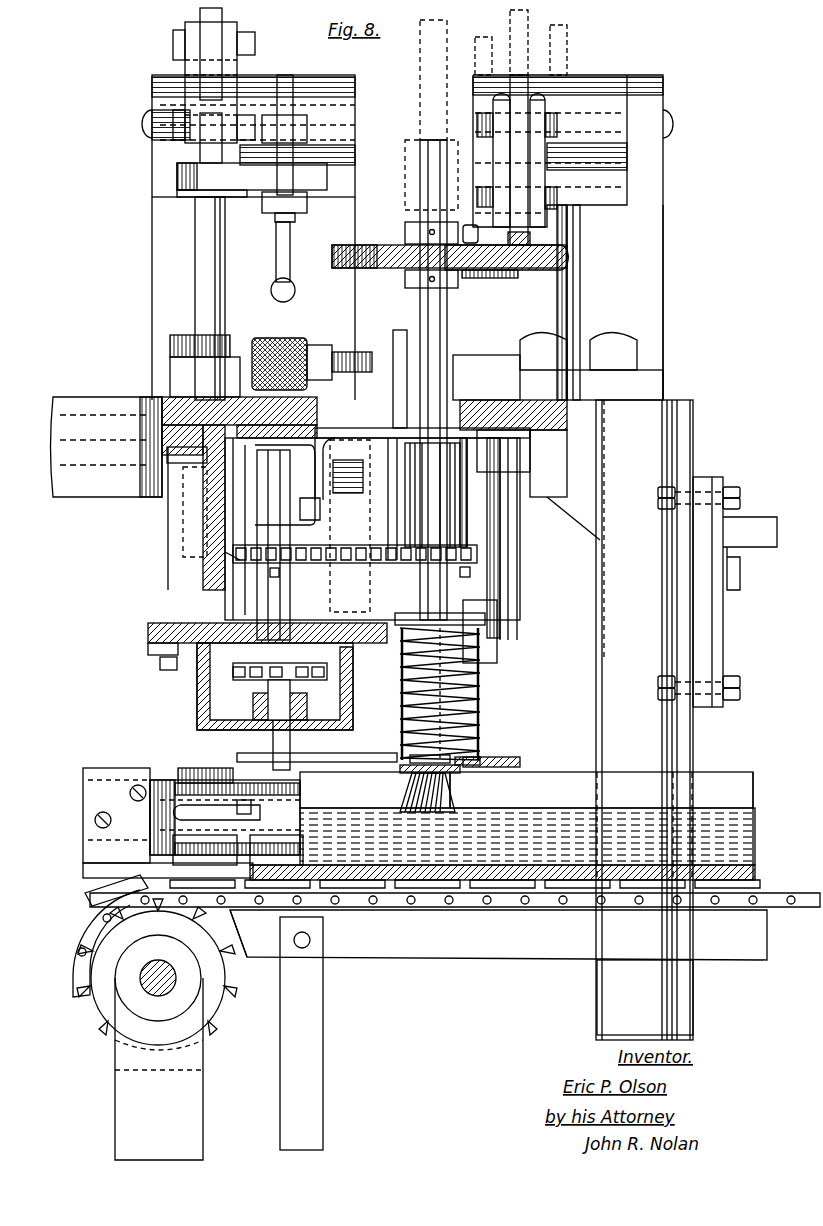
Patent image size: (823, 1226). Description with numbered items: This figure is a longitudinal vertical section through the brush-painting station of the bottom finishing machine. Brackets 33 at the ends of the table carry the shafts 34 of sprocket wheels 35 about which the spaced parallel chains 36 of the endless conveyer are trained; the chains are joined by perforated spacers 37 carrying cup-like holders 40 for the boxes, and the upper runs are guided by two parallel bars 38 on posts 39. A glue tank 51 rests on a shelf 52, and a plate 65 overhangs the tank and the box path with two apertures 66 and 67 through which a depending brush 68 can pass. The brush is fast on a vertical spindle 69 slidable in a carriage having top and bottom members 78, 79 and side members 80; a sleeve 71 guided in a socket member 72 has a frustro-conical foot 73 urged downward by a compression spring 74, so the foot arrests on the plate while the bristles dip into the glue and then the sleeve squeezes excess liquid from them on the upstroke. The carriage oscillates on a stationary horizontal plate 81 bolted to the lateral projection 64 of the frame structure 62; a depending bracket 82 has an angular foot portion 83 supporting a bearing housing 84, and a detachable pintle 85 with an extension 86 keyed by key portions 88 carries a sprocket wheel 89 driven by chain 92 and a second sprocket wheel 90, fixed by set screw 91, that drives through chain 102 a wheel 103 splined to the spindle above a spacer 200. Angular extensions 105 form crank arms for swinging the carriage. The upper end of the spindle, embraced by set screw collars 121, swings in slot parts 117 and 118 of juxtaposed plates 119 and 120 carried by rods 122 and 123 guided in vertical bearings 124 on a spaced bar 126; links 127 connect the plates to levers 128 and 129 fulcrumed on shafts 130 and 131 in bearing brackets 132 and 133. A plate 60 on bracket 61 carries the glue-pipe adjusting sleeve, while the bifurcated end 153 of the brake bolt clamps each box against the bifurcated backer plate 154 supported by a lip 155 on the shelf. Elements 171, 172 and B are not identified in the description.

The brackets 33 is at (125, 1126).
The shafts 34 is at (140, 975).
The sprocket wheels 35 is at (110, 1005).
The chains 36 is at (75, 930).
The perforated spacers 37 is at (400, 930).
The parallel bars 38 is at (445, 945).
The posts 39 is at (320, 1085).
The holders 40 is at (565, 880).
The tank 51 is at (735, 880).
The shelf 52 is at (85, 865).
The plate 60 is at (752, 522).
The bracket 61 is at (725, 622).
The frame structure 62 is at (60, 400).
The lateral projection 64 is at (215, 475).
The plate 65 is at (520, 760).
The aperture 66 is at (250, 755).
The aperture 67 is at (480, 757).
The brush 68 is at (410, 788).
The spindle 69 is at (418, 65).
The sleeve 71 is at (460, 722).
The socket member 72 is at (480, 670).
The frustro-conical foot 73 is at (455, 770).
The compression spring 74 is at (480, 696).
The top member 78 is at (397, 425).
The bottom member 79 is at (490, 605).
The side members 80 is at (350, 430).
The horizontal plate 81 is at (172, 410).
The depending bracket 82 is at (165, 540).
The angular foot portion 83 is at (145, 632).
The bearing housing 84 is at (200, 690).
The pintle 85 is at (285, 336).
The extension 86 is at (265, 710).
The key portions 88 is at (300, 597).
The sprocket wheel 89 is at (305, 680).
The sprocket wheel 90 is at (225, 552).
The set screw 91 is at (268, 588).
The chain 92 is at (185, 660).
The chain 102 is at (347, 545).
The sprocket wheel 103 is at (478, 563).
The angular extensions 105 is at (167, 460).
The slot part 117 is at (395, 258).
The slot part 118 is at (262, 185).
The plate 119 is at (560, 258).
The plate 120 is at (195, 180).
The set screw collars 121 is at (405, 233).
The rods 122 is at (485, 318).
The rods 123 is at (190, 218).
The vertical bearings 124 is at (168, 370).
The bar 126 is at (545, 400).
The links 127 is at (190, 67).
The lever 128 is at (520, 92).
The lever 129 is at (200, 12).
The shaft 130 is at (668, 118).
The shaft 131 is at (152, 124).
The bearing bracket 132 is at (645, 275).
The bearing bracket 133 is at (175, 254).
The bifurcated end 153 is at (245, 812).
The plate 154 is at (160, 780).
The lip 155 is at (83, 793).
The rod 171 is at (280, 267).
The bar 172 is at (285, 95).
The spacer 200 is at (462, 527).
The bottle B is at (205, 768).